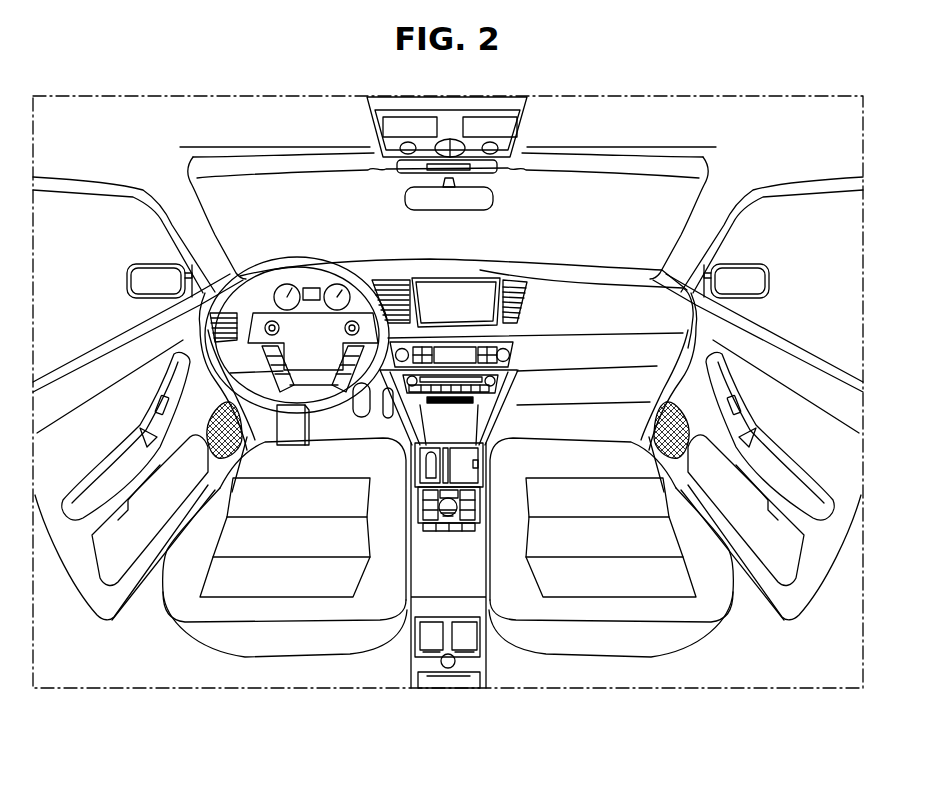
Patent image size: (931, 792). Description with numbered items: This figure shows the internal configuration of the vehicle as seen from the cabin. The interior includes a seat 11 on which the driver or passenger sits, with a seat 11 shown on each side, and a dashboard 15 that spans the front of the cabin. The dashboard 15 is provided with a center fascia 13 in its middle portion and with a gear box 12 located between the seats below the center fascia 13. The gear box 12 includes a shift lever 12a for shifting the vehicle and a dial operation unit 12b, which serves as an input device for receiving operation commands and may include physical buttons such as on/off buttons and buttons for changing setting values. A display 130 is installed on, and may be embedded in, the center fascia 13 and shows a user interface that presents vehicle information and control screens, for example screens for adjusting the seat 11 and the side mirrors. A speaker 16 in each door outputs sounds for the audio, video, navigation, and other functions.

The seat 11 is at (267, 643).
The gear box 12 is at (449, 565).
The shift lever 12a is at (413, 452).
The dial operation unit 12b is at (418, 508).
The center fascia 13 is at (495, 418).
The dashboard 15 is at (628, 305).
The speaker 16 is at (207, 420).
The display 130 is at (462, 277).